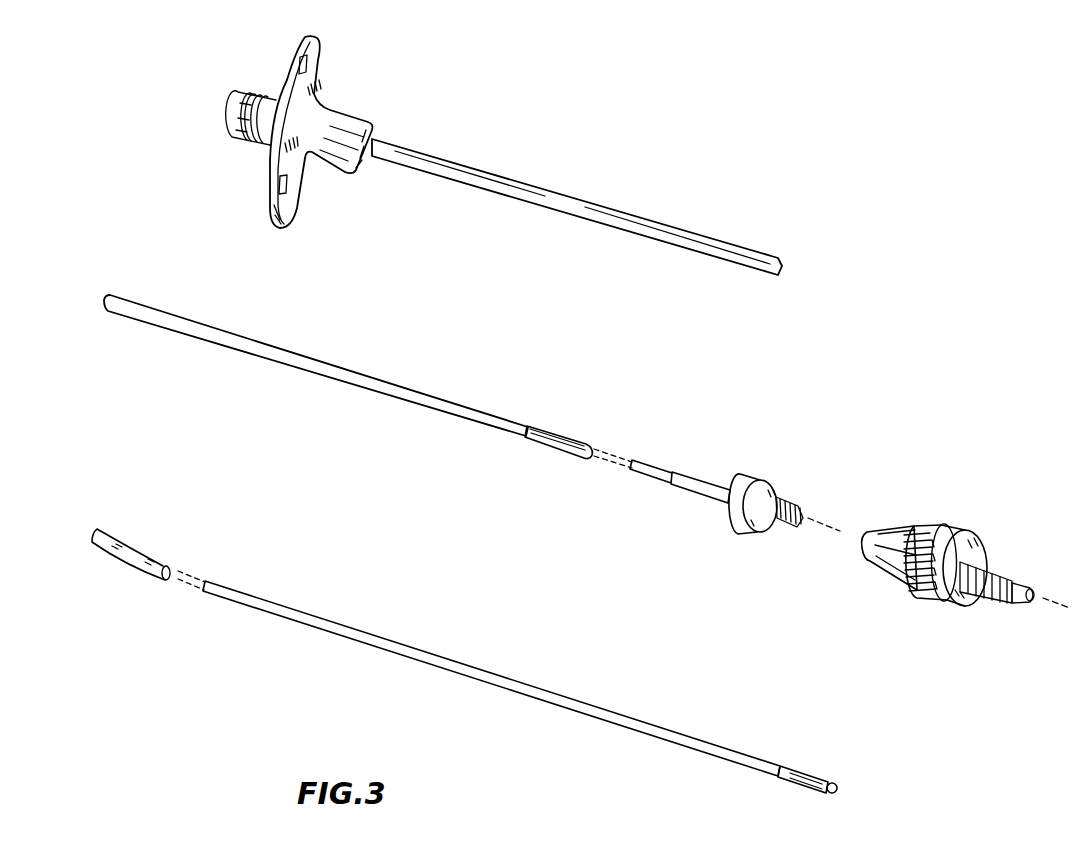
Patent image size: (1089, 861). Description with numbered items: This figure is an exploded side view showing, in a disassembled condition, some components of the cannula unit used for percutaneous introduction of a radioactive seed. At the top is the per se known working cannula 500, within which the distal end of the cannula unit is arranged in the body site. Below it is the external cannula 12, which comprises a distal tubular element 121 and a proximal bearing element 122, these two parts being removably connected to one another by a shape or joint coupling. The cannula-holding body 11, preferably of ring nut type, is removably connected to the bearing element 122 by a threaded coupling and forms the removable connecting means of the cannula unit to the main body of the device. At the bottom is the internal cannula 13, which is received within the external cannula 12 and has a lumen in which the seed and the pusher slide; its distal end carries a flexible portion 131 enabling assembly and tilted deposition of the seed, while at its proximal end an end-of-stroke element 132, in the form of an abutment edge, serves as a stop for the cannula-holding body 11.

The working cannula 500 is at (495, 166).
The distal tubular element 121 is at (330, 367).
The external cannula 12 is at (552, 457).
The proximal bearing element 122 is at (698, 492).
The cannula-holding body 11 is at (955, 526).
The internal cannula 13 is at (276, 612).
The flexible portion 131 is at (112, 534).
The end-of-stroke element 132 is at (843, 783).